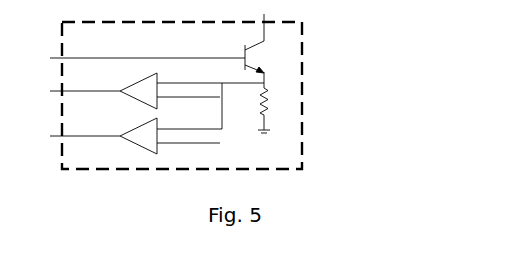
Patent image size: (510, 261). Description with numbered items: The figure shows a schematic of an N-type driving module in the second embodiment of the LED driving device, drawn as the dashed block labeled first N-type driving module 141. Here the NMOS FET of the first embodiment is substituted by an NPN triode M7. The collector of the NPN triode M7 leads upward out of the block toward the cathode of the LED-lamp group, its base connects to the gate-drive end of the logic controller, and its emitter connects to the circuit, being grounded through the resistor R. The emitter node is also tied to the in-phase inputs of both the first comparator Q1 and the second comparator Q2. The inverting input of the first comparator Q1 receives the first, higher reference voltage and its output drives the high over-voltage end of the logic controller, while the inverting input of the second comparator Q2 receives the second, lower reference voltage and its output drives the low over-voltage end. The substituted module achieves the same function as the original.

The first N-type driving module 141 is at (227, 95).
The first comparator Q1 is at (154, 95).
The second comparator Q2 is at (154, 140).
The NPN triode M7 is at (267, 51).
The resistor R is at (278, 101).